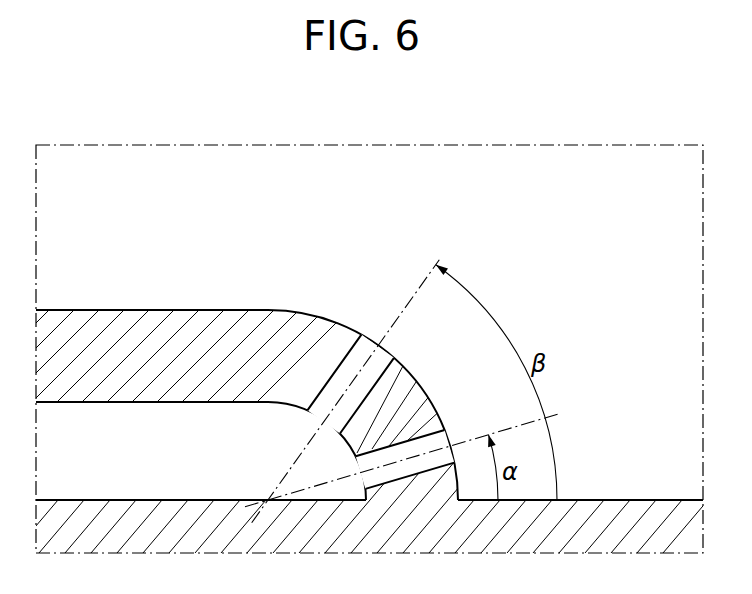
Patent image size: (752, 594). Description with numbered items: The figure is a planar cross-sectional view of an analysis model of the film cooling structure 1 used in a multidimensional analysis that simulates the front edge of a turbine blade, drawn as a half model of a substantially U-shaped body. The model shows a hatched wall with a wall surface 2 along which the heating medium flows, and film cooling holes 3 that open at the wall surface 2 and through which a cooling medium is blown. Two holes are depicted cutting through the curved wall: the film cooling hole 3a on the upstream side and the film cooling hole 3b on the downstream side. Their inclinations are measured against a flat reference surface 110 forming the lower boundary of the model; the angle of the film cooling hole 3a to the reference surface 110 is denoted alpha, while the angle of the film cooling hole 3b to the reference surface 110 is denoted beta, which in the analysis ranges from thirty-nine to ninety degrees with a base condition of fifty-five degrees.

The film cooling structure 1 is at (525, 280).
The wall surface 2 is at (183, 309).
The film cooling holes 3 is at (400, 366).
The film cooling hole on the upstream side 3a is at (450, 429).
The film cooling hole on the downstream side 3b is at (364, 338).
The reference surface 110 is at (643, 500).